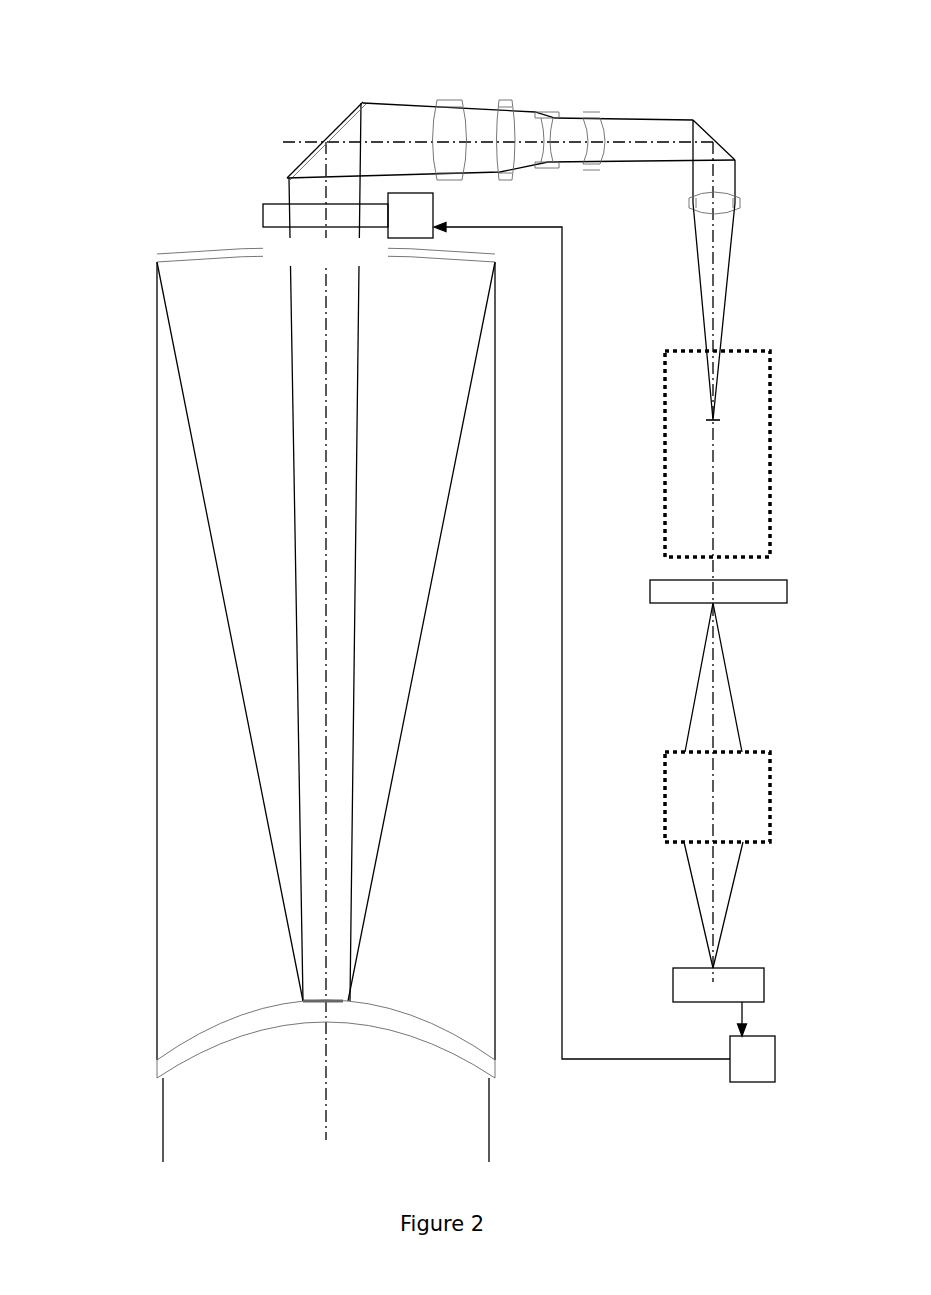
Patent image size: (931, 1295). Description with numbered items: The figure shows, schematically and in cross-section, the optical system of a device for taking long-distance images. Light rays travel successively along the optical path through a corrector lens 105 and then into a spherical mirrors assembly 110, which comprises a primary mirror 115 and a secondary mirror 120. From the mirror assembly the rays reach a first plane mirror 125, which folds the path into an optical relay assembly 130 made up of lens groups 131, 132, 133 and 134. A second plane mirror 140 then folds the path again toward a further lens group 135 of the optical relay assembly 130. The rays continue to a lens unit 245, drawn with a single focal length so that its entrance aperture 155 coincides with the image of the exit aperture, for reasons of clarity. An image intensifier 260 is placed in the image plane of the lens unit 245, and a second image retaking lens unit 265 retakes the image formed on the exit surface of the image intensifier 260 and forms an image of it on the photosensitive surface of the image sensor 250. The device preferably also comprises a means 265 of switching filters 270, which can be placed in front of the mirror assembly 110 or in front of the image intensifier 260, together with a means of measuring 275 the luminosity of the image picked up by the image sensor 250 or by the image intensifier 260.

The corrector lens 105 is at (477, 1058).
The spherical mirrors assembly 110 is at (116, 662).
The primary mirror 115 is at (165, 262).
The secondary mirror 120 is at (345, 1000).
The first plane mirror 125 is at (357, 112).
The optical relay assembly 130 is at (573, 82).
The lens group 131 is at (440, 160).
The lens group 132 is at (503, 160).
The lens group 133 is at (548, 112).
The lens group 134 is at (592, 150).
The lens group 135 is at (703, 203).
The second plane mirror 140 is at (693, 122).
The entrance aperture 155 is at (697, 420).
The lens unit 245 is at (685, 500).
The image sensor 250 is at (707, 990).
The image intensifier 260 is at (673, 590).
The second image retaking lens unit 265 is at (417, 205).
The filters 270 is at (274, 215).
The means of measuring luminosity 275 is at (742, 1068).